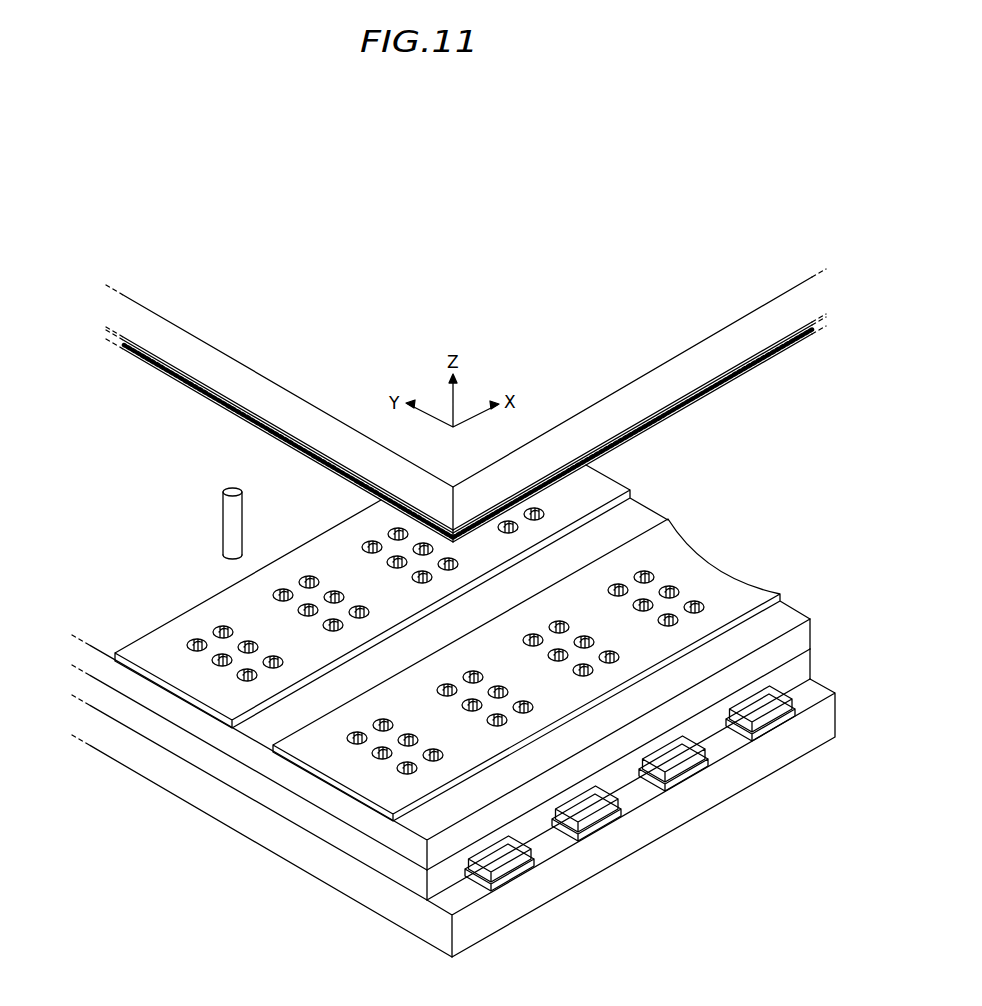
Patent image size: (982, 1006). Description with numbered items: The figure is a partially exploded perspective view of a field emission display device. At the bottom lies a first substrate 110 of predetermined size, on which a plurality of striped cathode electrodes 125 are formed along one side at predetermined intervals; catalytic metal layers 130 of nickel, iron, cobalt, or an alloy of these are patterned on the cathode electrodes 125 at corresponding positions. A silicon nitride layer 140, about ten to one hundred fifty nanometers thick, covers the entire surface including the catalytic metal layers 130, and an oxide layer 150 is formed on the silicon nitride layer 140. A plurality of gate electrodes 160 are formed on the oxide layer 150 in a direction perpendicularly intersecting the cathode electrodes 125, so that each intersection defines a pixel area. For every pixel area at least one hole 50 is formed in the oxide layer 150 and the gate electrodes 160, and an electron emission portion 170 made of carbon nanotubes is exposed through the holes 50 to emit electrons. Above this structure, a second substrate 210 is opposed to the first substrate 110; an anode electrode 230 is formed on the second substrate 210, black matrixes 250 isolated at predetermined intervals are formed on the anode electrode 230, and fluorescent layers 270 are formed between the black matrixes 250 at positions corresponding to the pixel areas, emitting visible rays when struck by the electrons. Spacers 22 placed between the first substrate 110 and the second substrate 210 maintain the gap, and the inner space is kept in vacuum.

The spacer 22 is at (231, 512).
The hole 50 is at (370, 755).
The first substrate 110 is at (665, 813).
The cathode electrode 125 is at (508, 881).
The catalytic metal layer 130 is at (526, 863).
The silicon nitride layer 140 is at (393, 863).
The oxide layer 150 is at (368, 823).
The gate electrode 160 is at (210, 688).
The electron emission portion 170 is at (223, 626).
The second substrate 210 is at (188, 346).
The anode electrode 230 is at (673, 410).
The black matrix 250 is at (720, 386).
The fluorescent layer 270 is at (765, 363).